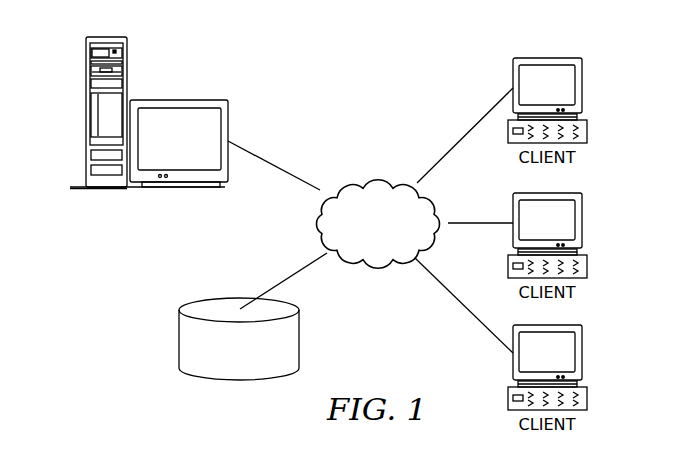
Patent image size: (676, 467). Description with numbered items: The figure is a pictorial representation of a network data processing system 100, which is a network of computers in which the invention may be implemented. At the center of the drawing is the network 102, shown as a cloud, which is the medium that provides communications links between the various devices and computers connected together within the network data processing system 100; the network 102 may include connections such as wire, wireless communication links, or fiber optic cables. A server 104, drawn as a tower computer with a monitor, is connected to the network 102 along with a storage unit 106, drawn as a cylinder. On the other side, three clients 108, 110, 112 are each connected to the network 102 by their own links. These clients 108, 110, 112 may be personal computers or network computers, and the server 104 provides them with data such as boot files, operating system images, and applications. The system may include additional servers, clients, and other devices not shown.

The network data processing system 100 is at (428, 67).
The network 102 is at (352, 173).
The server 104 is at (87, 113).
The storage unit 106 is at (178, 338).
The client 108 is at (583, 87).
The client 110 is at (583, 221).
The client 112 is at (582, 353).